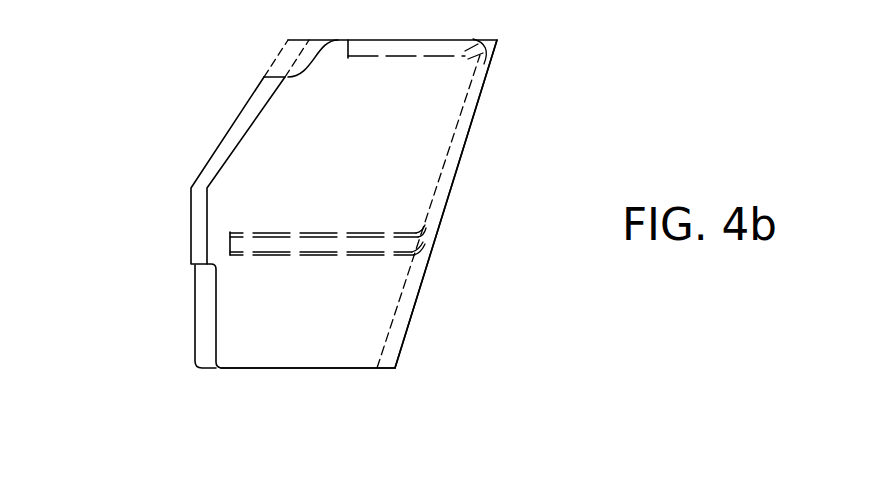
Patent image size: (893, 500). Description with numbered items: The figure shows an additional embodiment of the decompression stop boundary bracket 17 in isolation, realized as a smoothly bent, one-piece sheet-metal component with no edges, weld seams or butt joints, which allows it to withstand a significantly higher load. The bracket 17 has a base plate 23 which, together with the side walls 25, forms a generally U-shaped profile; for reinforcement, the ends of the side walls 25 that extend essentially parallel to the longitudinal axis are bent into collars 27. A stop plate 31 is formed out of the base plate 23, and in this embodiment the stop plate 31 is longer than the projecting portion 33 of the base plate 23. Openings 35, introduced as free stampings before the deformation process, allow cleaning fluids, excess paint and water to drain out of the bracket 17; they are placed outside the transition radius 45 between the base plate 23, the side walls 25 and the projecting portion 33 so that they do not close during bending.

The decompression stop boundary bracket 17 is at (140, 373).
The base plate 23 is at (457, 183).
The side walls 25 is at (280, 333).
The collars 27 is at (223, 134).
The stop plate 31 is at (325, 255).
The projecting portion 33 is at (365, 39).
The openings 35 is at (456, 67).
The transition radius 45 is at (491, 41).